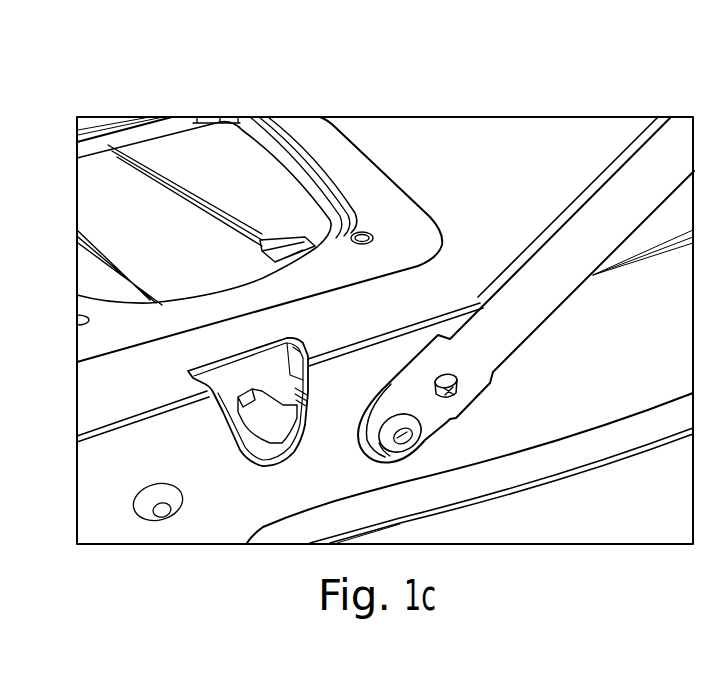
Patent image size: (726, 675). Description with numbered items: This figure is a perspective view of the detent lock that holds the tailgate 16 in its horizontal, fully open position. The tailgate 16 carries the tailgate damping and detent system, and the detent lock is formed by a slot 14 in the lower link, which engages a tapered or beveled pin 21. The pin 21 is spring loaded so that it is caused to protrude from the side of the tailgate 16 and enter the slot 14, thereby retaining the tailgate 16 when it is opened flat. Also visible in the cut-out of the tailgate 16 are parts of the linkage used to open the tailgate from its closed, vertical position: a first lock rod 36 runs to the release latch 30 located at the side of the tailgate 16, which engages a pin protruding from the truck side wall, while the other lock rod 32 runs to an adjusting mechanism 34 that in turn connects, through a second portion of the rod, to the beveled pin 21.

The slot 14 is at (459, 378).
The tailgate 16 is at (548, 133).
The tapered or beveled pin 21 is at (455, 394).
The release latch 30 is at (270, 417).
The lock rod 32 is at (178, 183).
The adjusting mechanism 34 is at (292, 247).
The first lock rod 36 is at (107, 250).